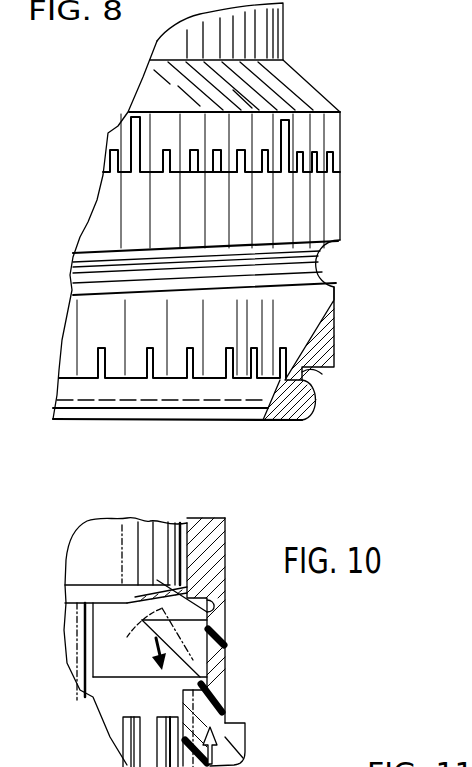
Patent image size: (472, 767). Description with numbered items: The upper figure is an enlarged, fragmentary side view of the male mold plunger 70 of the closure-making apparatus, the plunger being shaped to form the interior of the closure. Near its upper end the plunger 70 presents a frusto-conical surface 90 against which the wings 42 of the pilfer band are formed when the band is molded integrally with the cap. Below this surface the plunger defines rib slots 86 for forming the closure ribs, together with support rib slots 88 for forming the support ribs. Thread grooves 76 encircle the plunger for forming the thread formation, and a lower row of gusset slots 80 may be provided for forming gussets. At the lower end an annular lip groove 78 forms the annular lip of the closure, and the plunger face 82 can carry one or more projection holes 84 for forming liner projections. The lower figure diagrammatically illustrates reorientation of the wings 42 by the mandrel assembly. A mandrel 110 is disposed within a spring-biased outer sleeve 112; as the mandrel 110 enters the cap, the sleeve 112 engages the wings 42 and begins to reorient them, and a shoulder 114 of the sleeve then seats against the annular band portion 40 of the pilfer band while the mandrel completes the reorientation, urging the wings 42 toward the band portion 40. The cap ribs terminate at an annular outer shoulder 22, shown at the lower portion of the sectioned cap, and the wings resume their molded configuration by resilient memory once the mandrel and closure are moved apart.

In FIG. 8, the male mold plunger 70 is at (330, 68).
In FIG. 8, the frusto-conical surface 90 is at (327, 90).
In FIG. 8, the rib slots 86 is at (283, 133).
In FIG. 8, the support rib slots 88 is at (219, 173).
In FIG. 8, the thread grooves 76 is at (325, 246).
In FIG. 8, the gusset slots 80 is at (186, 358).
In FIG. 8, the annular lip groove 78 is at (316, 380).
In FIG. 8, the plunger face 82 is at (242, 425).
In FIG. 8, the projection holes 84 is at (288, 420).
In FIG. 10, the mandrel 110 is at (110, 572).
In FIG. 10, the outer sleeve 112 is at (210, 566).
In FIG. 10, the shoulder 114 is at (214, 609).
In FIG. 10, the annular band portion 40 is at (220, 632).
In FIG. 10, the annular outer shoulder 22 is at (243, 722).
In FIG. 10, the wings 42 is at (145, 635).